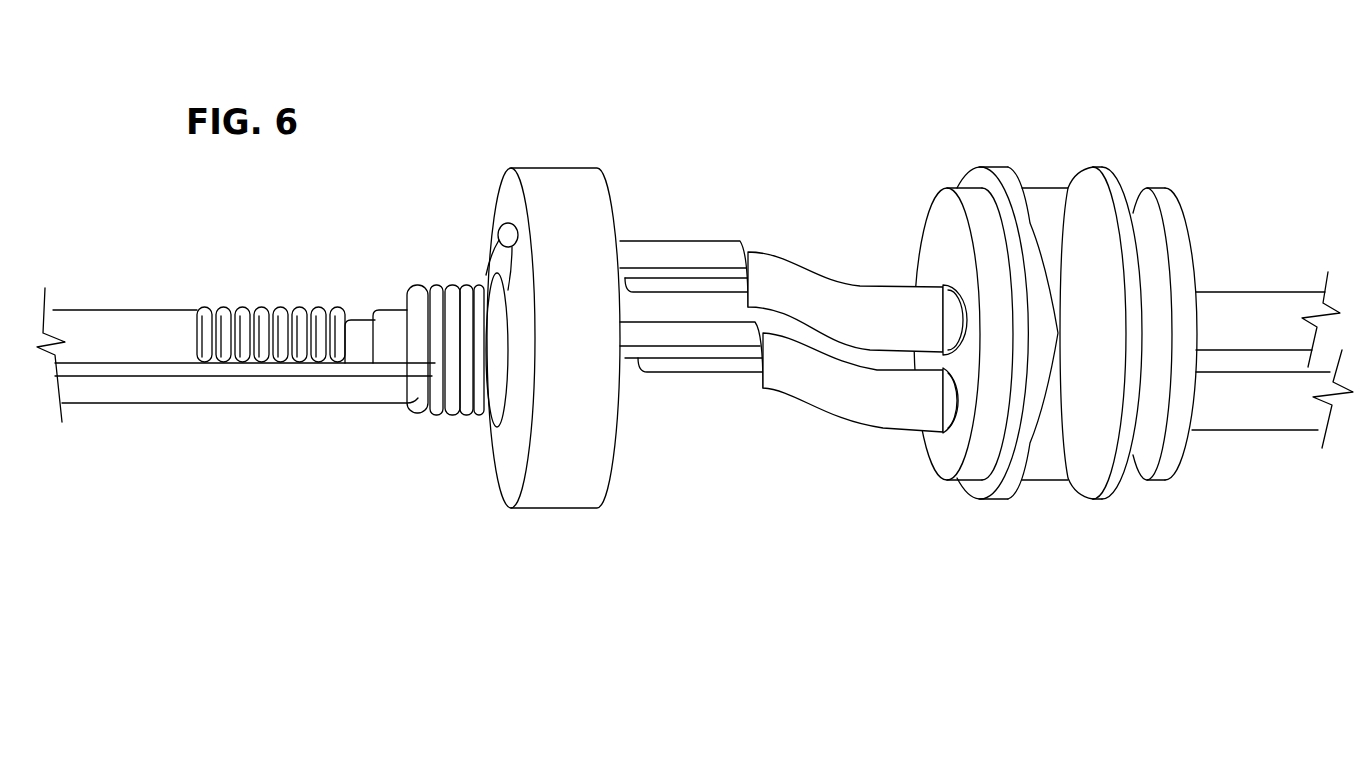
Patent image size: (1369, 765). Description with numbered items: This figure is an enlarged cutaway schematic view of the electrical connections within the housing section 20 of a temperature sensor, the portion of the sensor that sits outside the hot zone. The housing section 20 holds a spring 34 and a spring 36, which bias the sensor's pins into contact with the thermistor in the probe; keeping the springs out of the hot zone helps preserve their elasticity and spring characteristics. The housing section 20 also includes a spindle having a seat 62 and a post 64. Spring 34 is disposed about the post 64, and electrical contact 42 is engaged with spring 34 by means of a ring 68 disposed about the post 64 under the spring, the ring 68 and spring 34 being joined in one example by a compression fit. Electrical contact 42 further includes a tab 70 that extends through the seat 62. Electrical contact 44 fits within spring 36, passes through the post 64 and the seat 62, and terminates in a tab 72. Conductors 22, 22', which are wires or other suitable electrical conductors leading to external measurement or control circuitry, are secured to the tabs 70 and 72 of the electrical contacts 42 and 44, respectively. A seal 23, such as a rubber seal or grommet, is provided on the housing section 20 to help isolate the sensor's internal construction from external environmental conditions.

The housing section 20 is at (828, 150).
The conductor 22 is at (857, 273).
The conductor 22' is at (860, 412).
The seal 23 is at (1070, 453).
The spring 34 is at (458, 410).
The spring 36 is at (207, 318).
The electrical contact 42 is at (495, 417).
The electrical contact 44 is at (355, 332).
The seat 62 is at (522, 205).
The post 64 is at (398, 323).
The ring 68 is at (505, 323).
The tab 70 is at (503, 236).
The tab 72 is at (682, 352).